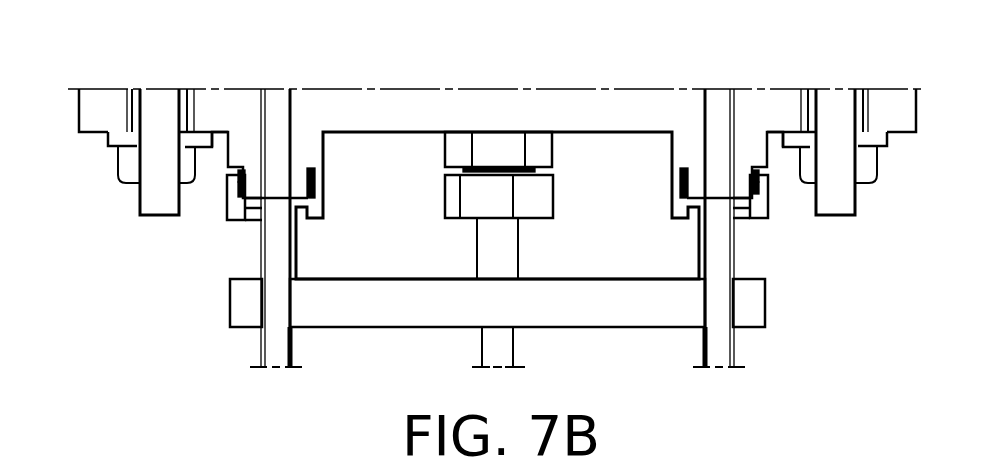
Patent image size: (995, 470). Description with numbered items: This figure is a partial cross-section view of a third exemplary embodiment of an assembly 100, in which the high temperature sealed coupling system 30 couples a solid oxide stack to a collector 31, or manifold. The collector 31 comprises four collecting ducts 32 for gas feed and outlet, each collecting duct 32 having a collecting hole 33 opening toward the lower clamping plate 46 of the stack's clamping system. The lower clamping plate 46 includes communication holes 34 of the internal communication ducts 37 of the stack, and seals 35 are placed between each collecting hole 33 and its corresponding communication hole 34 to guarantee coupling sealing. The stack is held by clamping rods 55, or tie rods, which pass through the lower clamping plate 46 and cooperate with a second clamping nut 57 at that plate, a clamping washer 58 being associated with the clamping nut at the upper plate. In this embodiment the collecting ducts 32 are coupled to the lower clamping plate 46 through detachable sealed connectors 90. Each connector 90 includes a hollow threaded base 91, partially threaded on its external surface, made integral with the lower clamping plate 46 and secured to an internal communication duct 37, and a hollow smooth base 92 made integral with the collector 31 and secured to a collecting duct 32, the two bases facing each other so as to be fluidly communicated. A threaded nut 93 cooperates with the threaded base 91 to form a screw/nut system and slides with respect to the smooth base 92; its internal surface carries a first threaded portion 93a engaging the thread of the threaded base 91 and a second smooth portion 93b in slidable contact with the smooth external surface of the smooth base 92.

The high temperature sealed coupling system 30 is at (200, 340).
The collector 31 is at (243, 315).
The collecting ducts 32 is at (490, 348).
The collecting hole 33 is at (447, 167).
The communication holes 34 is at (684, 178).
The seals 35 is at (284, 207).
The internal communication ducts 37 is at (268, 105).
The lower clamping plate 46 is at (100, 105).
The clamping rods 55 is at (140, 200).
The second clamping nut 57 is at (120, 166).
The clamping washer 58 is at (110, 140).
The detachable sealed connectors 90 is at (205, 190).
The threaded base 91 is at (316, 153).
The smooth base 92 is at (242, 258).
The threaded nut 93 is at (320, 207).
The first threaded portion 93a is at (245, 195).
The second smooth portion 93b is at (245, 206).
The assembly 100 is at (136, 310).